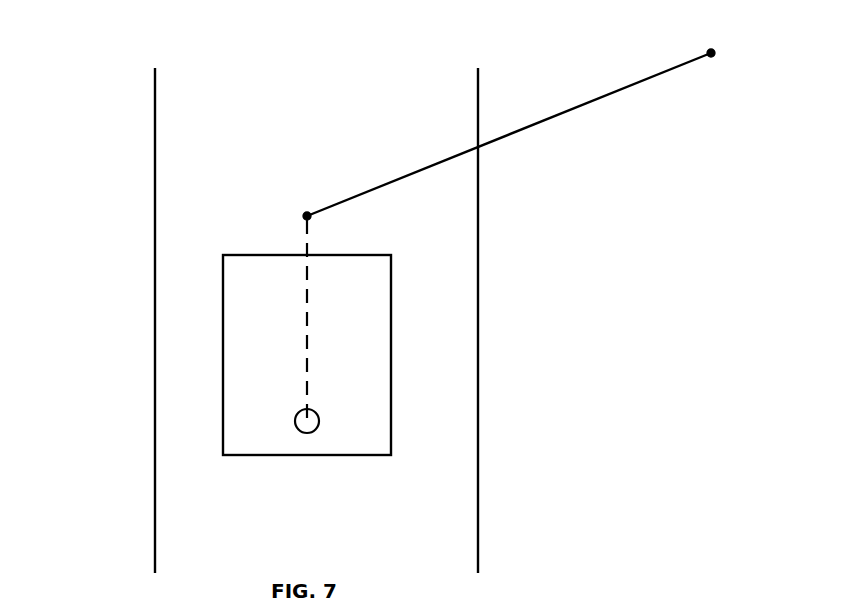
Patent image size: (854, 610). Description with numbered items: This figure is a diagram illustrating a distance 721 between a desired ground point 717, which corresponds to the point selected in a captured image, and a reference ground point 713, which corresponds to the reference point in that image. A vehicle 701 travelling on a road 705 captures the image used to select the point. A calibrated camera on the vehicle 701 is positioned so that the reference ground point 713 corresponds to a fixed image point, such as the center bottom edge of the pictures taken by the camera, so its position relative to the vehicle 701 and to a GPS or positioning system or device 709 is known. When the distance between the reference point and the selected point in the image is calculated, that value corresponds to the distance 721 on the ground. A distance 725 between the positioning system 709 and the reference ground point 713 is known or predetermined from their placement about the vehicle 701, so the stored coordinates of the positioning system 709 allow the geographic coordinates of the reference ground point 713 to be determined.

The vehicle 701 is at (391, 310).
The road 705 is at (200, 152).
The positioning system or device 709 is at (294, 420).
The reference ground point 713 is at (306, 212).
The desired ground point 717 is at (712, 50).
The distance 721 is at (621, 88).
The distance 725 is at (305, 336).